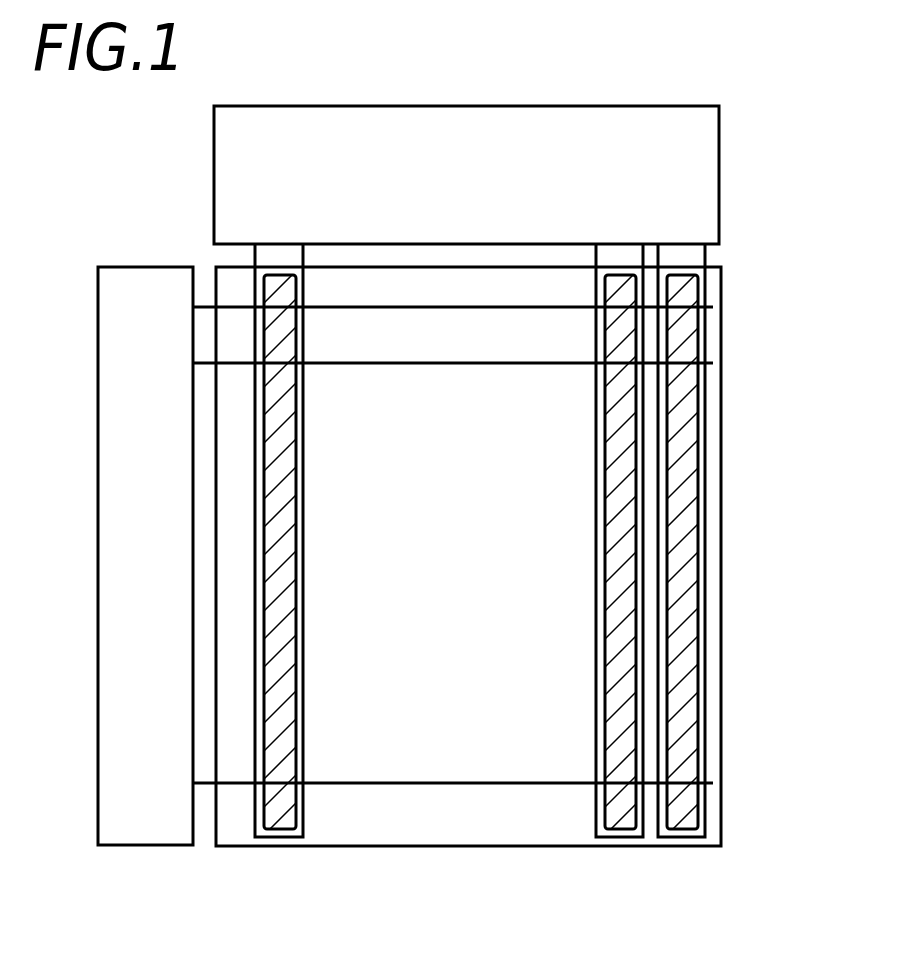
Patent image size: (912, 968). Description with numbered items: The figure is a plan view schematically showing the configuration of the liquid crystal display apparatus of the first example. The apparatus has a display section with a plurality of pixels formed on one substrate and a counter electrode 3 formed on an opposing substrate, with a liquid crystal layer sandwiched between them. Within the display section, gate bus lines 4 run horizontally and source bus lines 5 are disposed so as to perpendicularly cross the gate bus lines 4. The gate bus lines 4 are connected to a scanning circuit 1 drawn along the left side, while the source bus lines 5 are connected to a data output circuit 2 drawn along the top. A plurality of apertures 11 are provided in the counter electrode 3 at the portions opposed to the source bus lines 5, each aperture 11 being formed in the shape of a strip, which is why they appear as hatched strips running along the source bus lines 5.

The scanning circuit 1 is at (126, 832).
The data output circuit 2 is at (710, 159).
The counter electrode 3 is at (551, 831).
The gate bus lines 4 is at (443, 364).
The source bus lines 5 is at (297, 840).
The apertures 11 is at (280, 531).